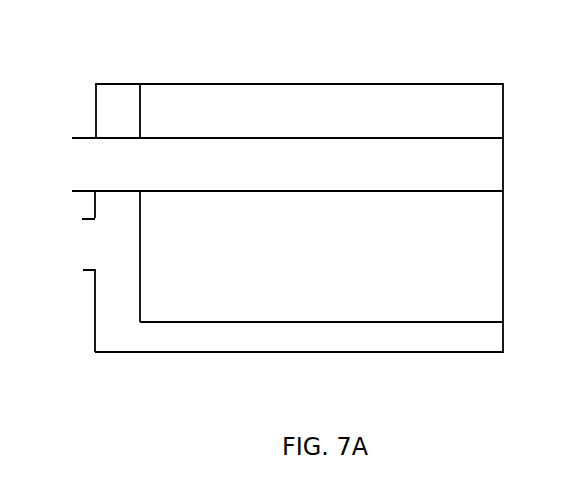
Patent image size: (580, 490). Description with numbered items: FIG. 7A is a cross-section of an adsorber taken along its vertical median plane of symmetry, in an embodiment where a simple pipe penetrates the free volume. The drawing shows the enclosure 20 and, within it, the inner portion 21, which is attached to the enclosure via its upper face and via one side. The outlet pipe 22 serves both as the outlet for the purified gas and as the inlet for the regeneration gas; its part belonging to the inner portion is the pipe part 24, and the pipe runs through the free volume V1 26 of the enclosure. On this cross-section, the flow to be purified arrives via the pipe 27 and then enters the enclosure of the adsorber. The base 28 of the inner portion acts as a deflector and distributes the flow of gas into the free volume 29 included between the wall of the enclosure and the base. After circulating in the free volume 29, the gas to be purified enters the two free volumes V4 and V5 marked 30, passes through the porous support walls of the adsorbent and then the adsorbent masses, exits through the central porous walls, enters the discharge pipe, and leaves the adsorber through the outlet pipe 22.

The enclosure 20 is at (122, 84).
The part of the pipe belonging to the inner portion 24 is at (275, 138).
The outlet pipe of the purified gas and inlet of the regeneration gas 22 is at (80, 191).
The free volume 29 is at (115, 210).
The pipe 27 is at (83, 270).
The base of the inner portion 28 is at (140, 245).
The free volume V1 26 is at (275, 262).
The free volumes V4 and V5 30 is at (341, 342).
The inner portion 21 is at (468, 322).